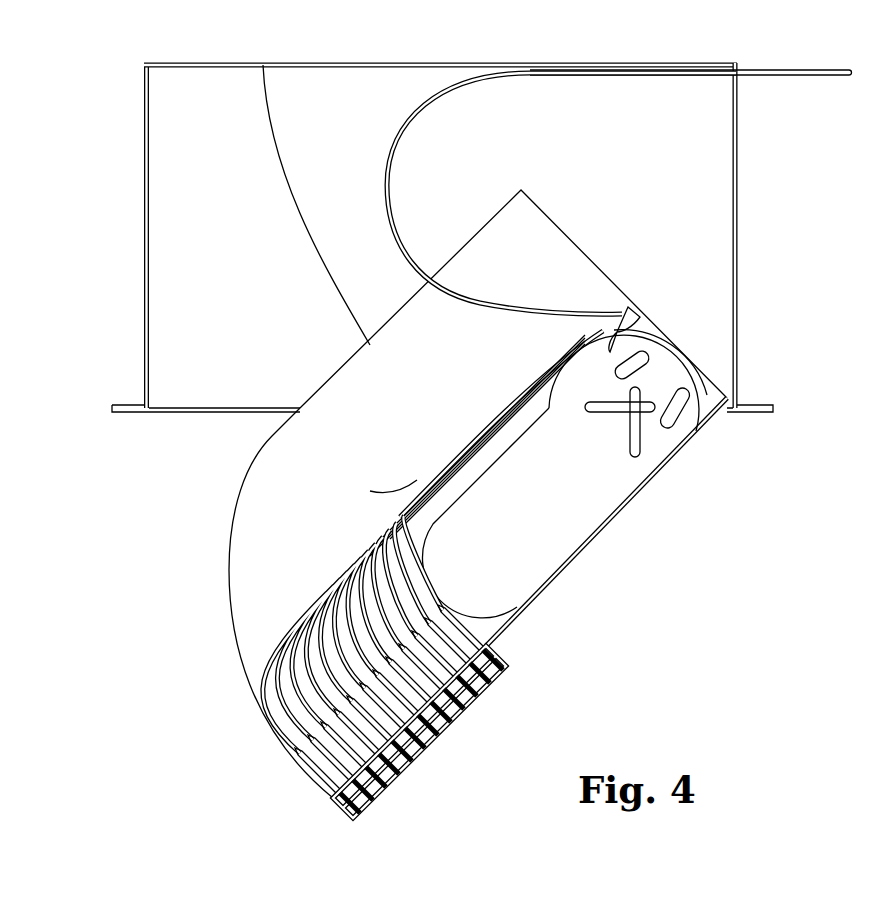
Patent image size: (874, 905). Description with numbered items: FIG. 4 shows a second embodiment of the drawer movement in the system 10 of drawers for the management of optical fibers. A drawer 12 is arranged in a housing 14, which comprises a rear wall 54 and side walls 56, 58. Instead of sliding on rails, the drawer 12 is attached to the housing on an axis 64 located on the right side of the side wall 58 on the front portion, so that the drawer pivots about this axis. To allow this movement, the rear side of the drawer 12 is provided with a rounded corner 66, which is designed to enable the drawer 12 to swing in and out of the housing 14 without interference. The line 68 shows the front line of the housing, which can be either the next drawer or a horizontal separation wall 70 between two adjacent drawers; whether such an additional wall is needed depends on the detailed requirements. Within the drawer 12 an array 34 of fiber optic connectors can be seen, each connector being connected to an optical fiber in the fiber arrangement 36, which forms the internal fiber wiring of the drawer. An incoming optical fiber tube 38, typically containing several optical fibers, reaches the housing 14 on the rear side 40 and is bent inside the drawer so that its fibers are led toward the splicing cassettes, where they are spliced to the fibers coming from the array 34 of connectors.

The system of drawers 10 is at (118, 78).
The drawer 12 is at (248, 640).
The housing 14 is at (142, 305).
The array of fiber optic connectors 34 is at (456, 724).
The fiber arrangement 36 is at (304, 598).
The incoming optical fiber tube 38 is at (793, 73).
The rear side 40 is at (624, 521).
The rear wall 54 is at (435, 63).
The side wall 56 is at (144, 186).
The side wall 58 is at (740, 252).
The axis 64 is at (725, 403).
The rounded corner 66 is at (263, 65).
The front line of the housing 68 is at (190, 412).
The horizontal separation wall 70 is at (193, 88).